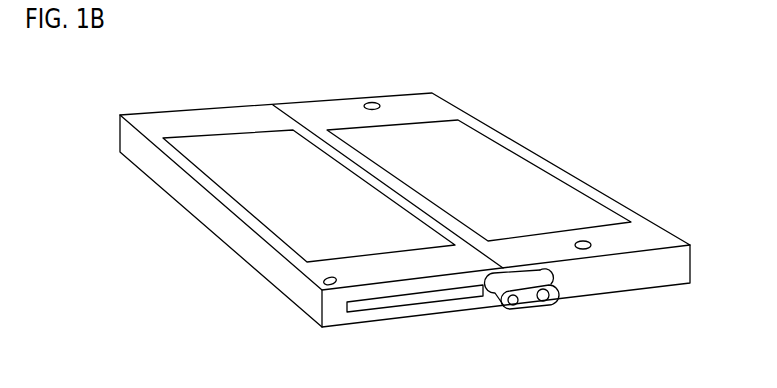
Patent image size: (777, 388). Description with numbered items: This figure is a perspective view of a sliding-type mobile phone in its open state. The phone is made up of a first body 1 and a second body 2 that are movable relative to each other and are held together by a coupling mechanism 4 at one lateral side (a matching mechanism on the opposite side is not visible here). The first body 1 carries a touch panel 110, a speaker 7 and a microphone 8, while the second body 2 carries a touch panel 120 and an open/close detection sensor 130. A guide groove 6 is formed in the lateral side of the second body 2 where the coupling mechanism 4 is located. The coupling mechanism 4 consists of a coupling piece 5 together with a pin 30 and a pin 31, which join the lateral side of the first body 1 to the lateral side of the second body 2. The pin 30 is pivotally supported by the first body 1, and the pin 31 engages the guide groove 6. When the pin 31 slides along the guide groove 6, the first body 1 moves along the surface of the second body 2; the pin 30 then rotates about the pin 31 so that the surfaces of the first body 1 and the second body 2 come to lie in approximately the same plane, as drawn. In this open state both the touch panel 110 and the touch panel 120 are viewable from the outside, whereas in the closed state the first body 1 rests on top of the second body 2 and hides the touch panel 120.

The first body 1 is at (573, 177).
The second body 2 is at (227, 228).
The coupling mechanism 4 is at (552, 318).
The coupling piece 5 is at (528, 303).
The guide groove 6 is at (370, 307).
The speaker 7 is at (368, 101).
The microphone 8 is at (588, 242).
The pin 30 is at (558, 303).
The pin 31 is at (513, 308).
The touch panel 110 is at (403, 132).
The touch panel 120 is at (225, 142).
The open/close detection sensor 130 is at (338, 284).